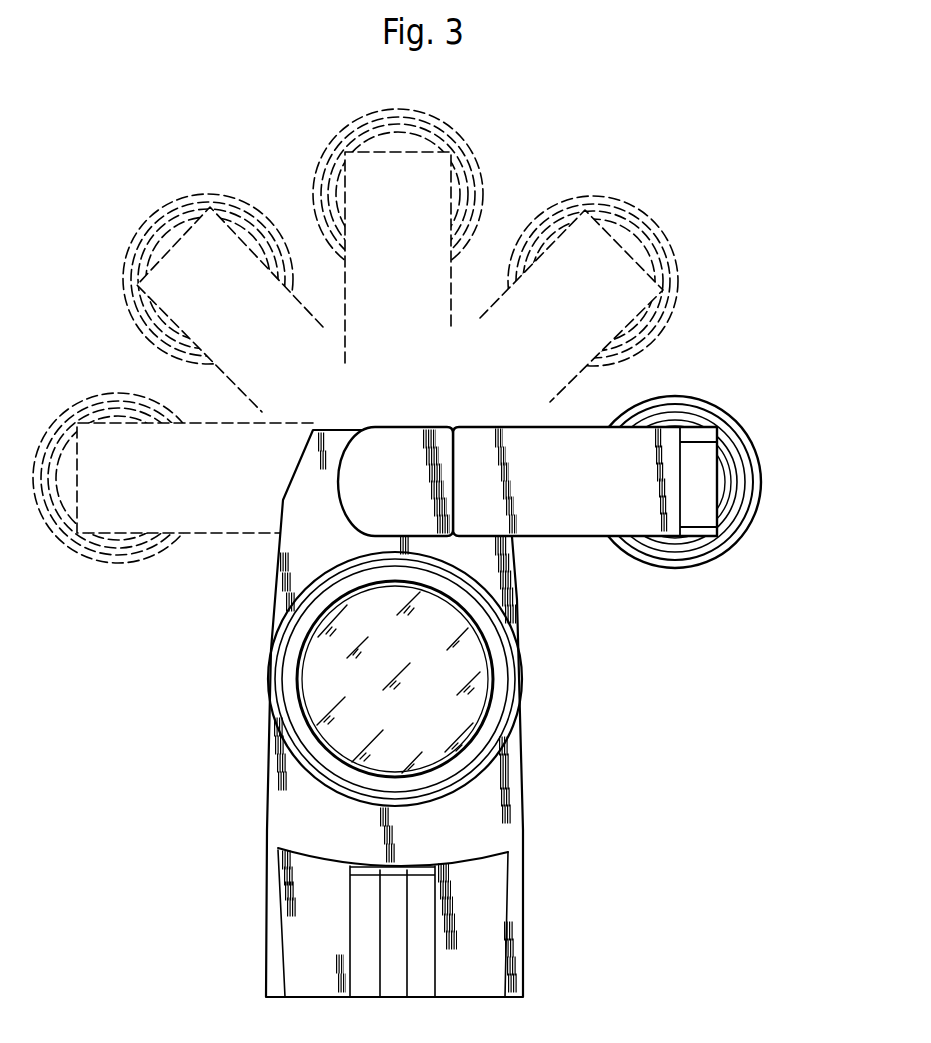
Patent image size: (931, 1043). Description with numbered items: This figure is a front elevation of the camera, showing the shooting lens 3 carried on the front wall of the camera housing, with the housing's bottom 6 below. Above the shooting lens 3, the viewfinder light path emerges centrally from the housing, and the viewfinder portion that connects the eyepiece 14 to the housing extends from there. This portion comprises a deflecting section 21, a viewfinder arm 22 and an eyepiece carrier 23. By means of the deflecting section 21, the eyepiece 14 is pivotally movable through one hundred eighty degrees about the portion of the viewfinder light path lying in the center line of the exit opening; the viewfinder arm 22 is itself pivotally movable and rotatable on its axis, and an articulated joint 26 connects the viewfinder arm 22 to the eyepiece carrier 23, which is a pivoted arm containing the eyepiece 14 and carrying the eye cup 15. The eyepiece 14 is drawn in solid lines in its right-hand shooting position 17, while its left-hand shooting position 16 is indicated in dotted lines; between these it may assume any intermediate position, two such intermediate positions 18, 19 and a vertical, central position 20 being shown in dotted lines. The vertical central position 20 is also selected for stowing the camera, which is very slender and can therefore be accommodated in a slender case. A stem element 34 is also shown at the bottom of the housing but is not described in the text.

The shooting lens 3 is at (483, 690).
The bottom 6 is at (333, 998).
The eyepiece 14 is at (737, 473).
The eye cup 15 is at (748, 506).
The left-hand shooting position 16 is at (117, 543).
The right-hand shooting position 17 is at (669, 418).
The intermediate position 18 is at (640, 238).
The intermediate position 19 is at (165, 232).
The vertical central position 20 is at (409, 137).
The deflecting section 21 is at (412, 441).
The viewfinder arm 22 is at (577, 527).
The eyepiece carrier 23 is at (722, 498).
The articulated joint 26 is at (700, 447).
The stem column 34 is at (423, 985).